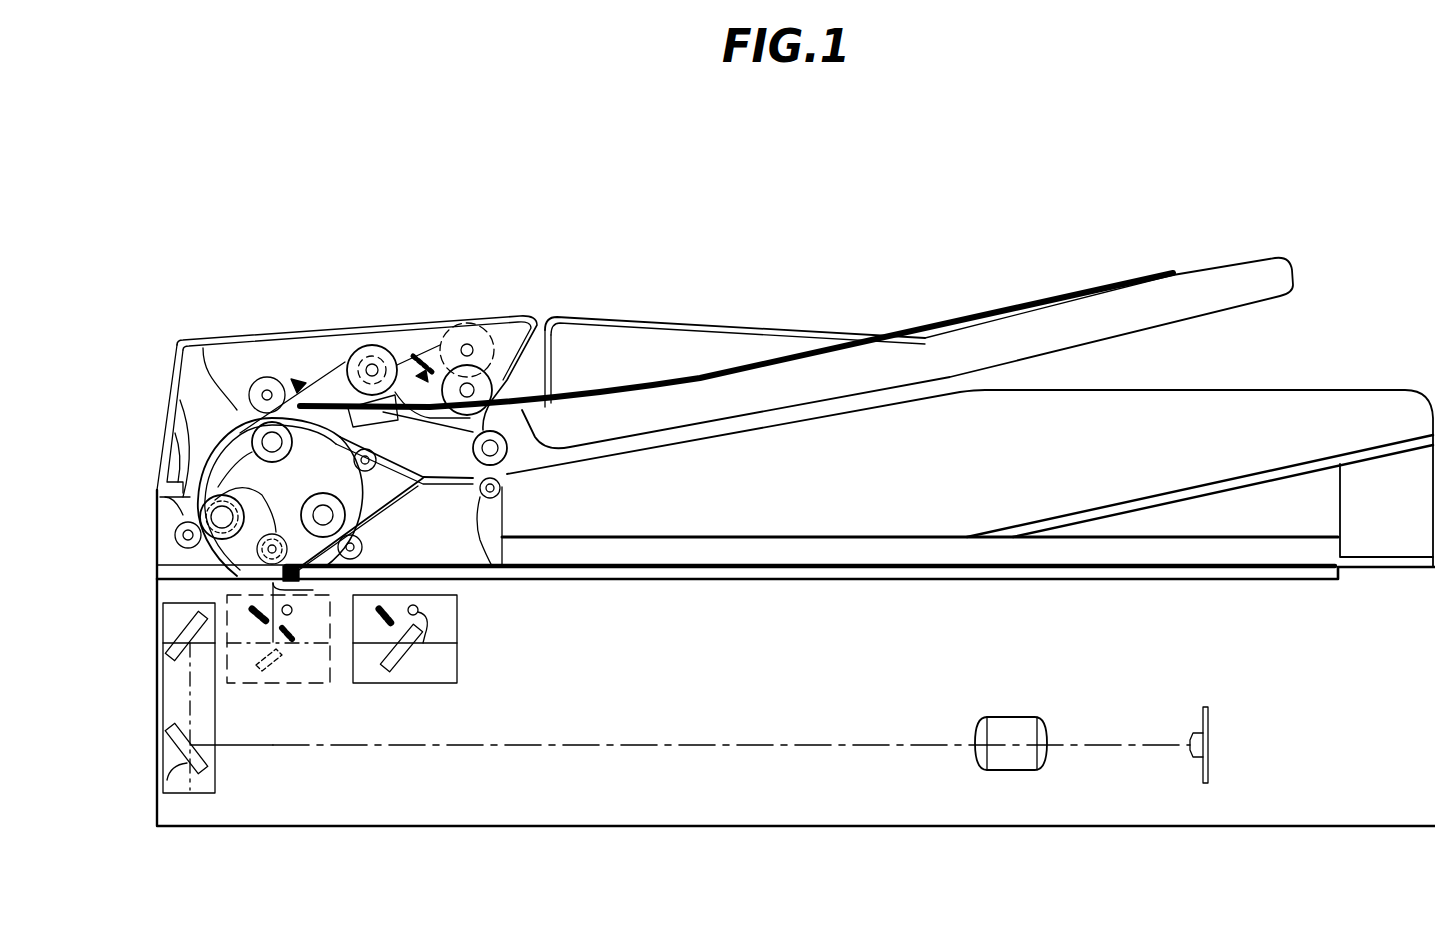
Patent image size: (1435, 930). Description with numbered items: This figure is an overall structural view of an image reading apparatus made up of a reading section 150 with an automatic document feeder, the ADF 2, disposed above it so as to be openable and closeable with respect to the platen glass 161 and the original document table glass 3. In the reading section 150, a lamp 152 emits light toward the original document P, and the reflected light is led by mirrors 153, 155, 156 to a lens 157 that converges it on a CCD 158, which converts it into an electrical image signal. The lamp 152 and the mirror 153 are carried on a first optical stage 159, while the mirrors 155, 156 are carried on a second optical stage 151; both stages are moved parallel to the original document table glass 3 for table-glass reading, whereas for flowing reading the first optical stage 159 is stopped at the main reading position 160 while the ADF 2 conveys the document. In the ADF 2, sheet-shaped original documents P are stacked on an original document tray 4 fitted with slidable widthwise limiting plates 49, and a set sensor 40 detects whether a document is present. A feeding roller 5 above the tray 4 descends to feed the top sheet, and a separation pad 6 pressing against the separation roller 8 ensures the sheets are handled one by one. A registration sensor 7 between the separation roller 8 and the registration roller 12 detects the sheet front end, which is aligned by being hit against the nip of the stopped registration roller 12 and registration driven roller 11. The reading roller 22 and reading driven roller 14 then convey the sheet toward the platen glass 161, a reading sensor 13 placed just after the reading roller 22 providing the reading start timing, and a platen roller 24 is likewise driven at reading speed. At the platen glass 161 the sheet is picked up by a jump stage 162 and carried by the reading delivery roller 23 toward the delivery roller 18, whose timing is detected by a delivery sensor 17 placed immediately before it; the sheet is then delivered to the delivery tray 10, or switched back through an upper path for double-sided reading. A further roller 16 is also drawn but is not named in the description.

The ADF 2 is at (670, 290).
The original document table glass 3 is at (628, 572).
The original document tray 4 is at (773, 377).
The feeding roller 5 is at (480, 337).
The separation pad 6 is at (350, 355).
The registration sensor 7 is at (300, 383).
The separation roller 8 is at (380, 330).
The delivery tray 10 is at (833, 547).
The registration driven roller 11 is at (270, 378).
The registration roller 12 is at (240, 410).
The reading sensor 13 is at (262, 568).
The reading driven roller 14 is at (175, 535).
The roller 16 is at (368, 547).
The delivery sensor 17 is at (555, 325).
The delivery roller 18 is at (502, 567).
The reading roller 22 is at (175, 433).
The reading delivery roller 23 is at (407, 495).
The platen roller 24 is at (207, 403).
The set sensor 40 is at (421, 368).
The widthwise limiting plates 49 is at (705, 327).
The original document P is at (966, 312).
The reading section 150 is at (1224, 812).
The second optical stage 151 is at (217, 770).
The lamp 152 is at (457, 638).
The mirror 153 is at (413, 650).
The mirror 155 is at (152, 652).
The mirror 156 is at (160, 785).
The lens 157 is at (1013, 727).
The CCD 158 is at (1207, 733).
The first optical stage 159 is at (447, 670).
The main reading position 160 is at (287, 680).
The platen glass 161 is at (157, 621).
The jump stage 162 is at (313, 590).